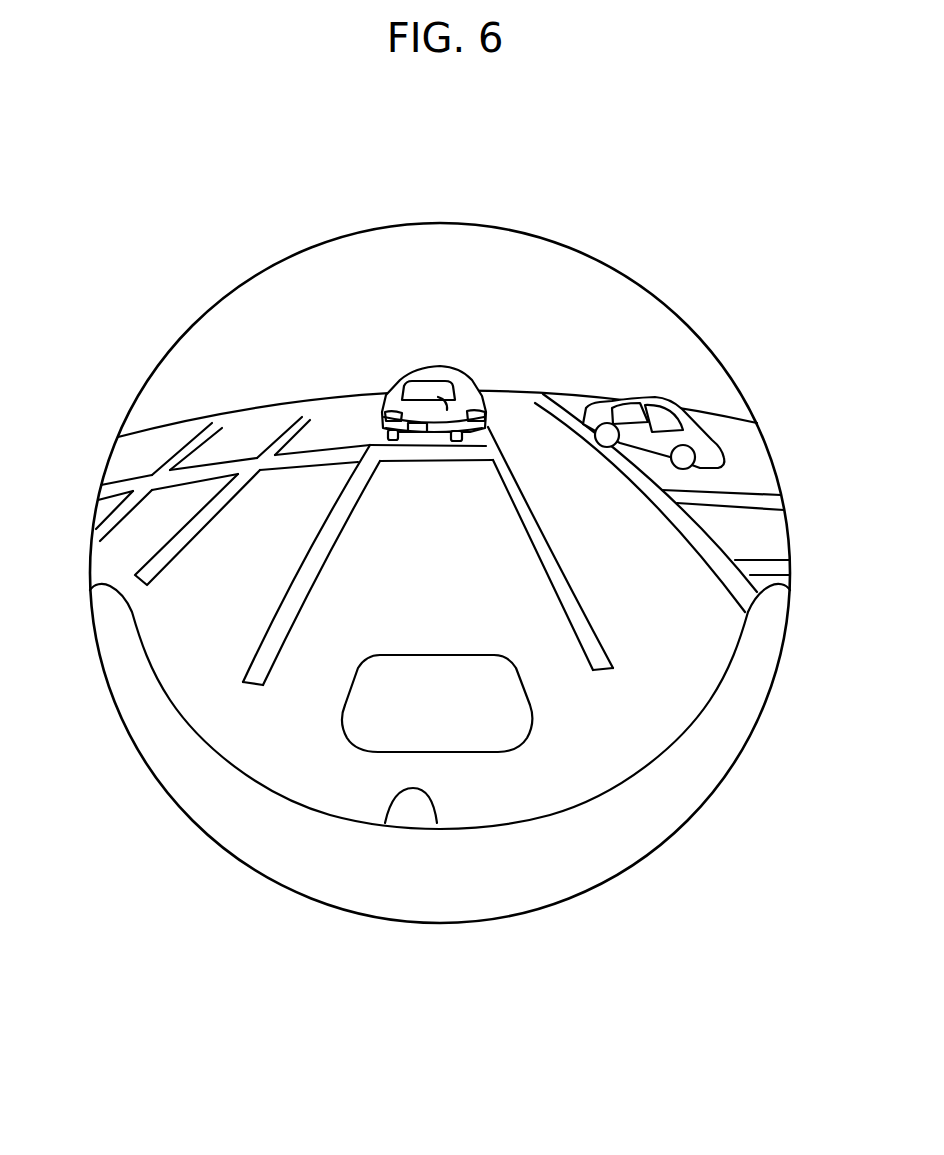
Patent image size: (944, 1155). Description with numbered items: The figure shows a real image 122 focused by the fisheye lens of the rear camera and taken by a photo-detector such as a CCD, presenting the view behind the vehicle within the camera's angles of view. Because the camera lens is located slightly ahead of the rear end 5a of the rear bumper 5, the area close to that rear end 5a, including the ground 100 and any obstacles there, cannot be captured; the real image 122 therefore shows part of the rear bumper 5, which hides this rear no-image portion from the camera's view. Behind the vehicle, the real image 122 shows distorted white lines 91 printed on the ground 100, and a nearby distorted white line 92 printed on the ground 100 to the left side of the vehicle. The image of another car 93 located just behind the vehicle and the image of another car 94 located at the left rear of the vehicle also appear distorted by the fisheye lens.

The real image 122 is at (622, 254).
The ground 100 is at (645, 705).
The white lines 91 is at (297, 587).
The white line 92 is at (686, 522).
The another car 93 is at (420, 408).
The another car 94 is at (626, 400).
The rear bumper 5 is at (573, 848).
The rear end of the rear bumper 5a is at (384, 824).